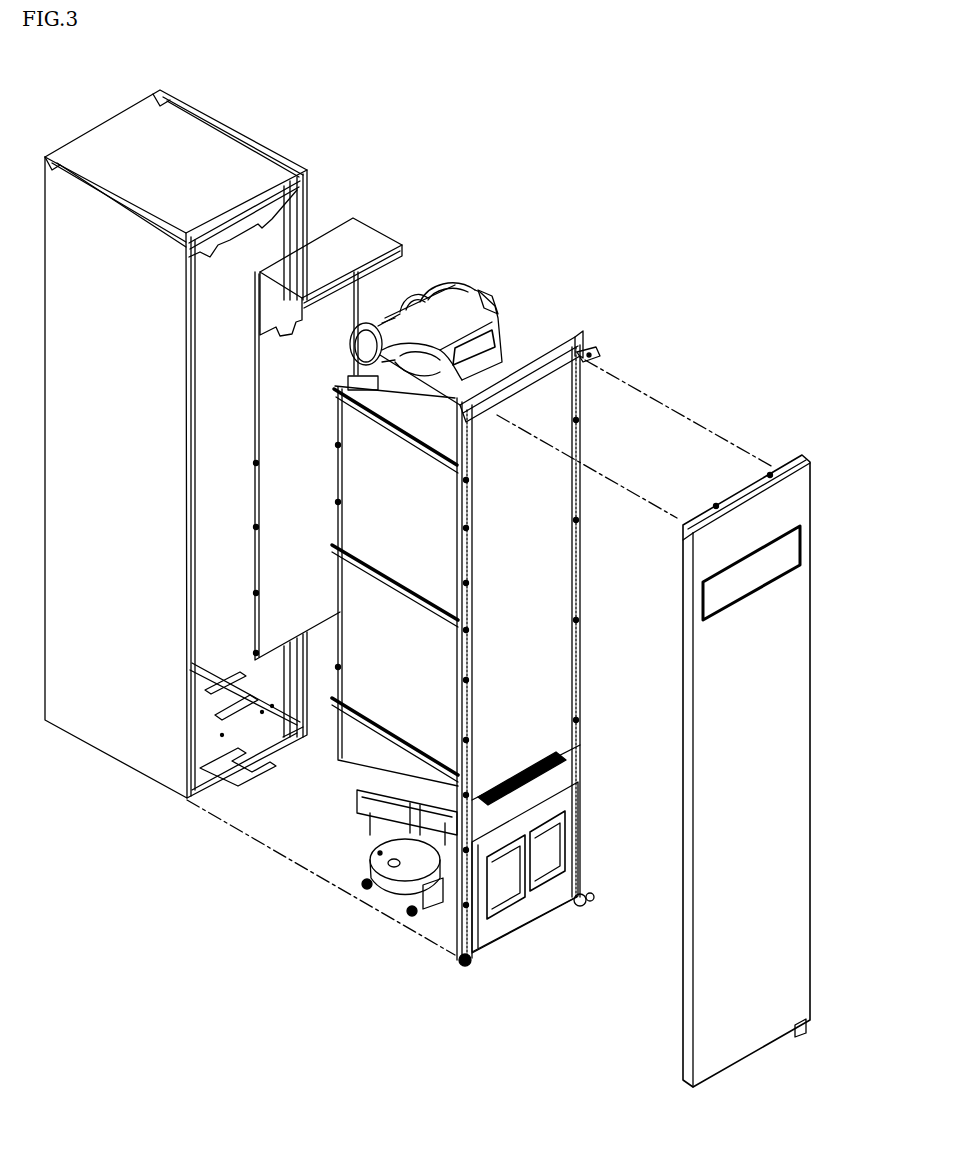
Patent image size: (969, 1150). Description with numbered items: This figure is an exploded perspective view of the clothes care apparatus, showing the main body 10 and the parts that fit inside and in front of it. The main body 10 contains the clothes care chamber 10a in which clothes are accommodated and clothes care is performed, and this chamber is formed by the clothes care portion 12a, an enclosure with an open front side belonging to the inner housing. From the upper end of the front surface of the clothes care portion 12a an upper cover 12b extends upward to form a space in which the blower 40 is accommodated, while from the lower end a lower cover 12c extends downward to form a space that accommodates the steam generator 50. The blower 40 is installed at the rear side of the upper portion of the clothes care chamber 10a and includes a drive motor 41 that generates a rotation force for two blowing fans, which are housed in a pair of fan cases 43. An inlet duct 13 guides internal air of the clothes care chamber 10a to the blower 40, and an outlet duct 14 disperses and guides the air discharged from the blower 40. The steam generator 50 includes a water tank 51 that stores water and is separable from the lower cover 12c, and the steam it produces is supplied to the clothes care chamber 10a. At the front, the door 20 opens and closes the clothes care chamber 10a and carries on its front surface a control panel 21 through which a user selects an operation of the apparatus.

The main body 10 is at (232, 118).
The clothes care chamber 10a is at (548, 658).
The clothes care portion 12a is at (590, 353).
The upper cover 12b is at (546, 364).
The lower cover 12c is at (498, 935).
The inlet duct 13 is at (370, 236).
The outlet duct 14 is at (467, 320).
The door 20 is at (808, 797).
The control panel 21 is at (806, 549).
The blower 40 is at (441, 262).
The drive motor 41 is at (421, 295).
The fan cases 43 is at (374, 318).
The steam generator 50 is at (376, 908).
The water tank 51 is at (508, 904).